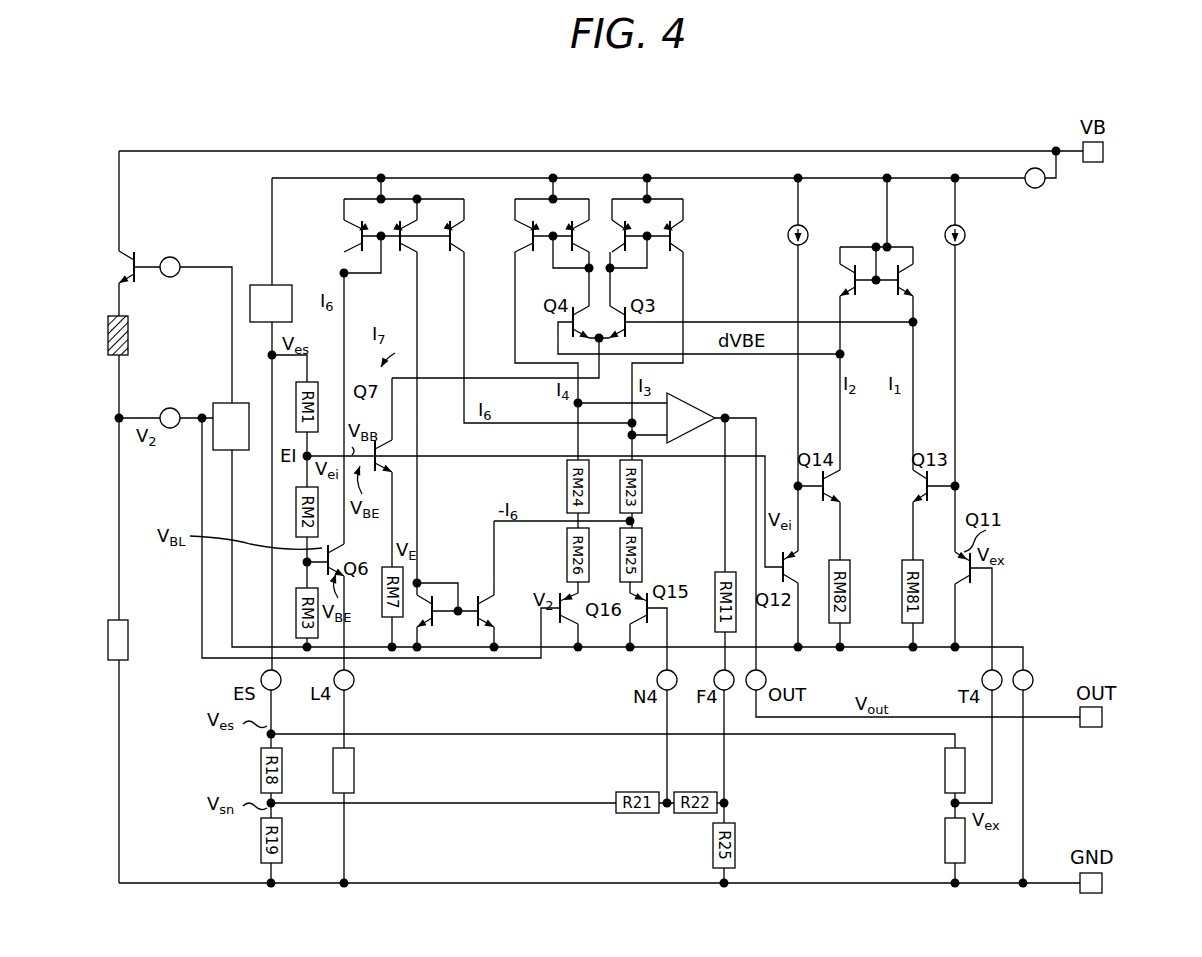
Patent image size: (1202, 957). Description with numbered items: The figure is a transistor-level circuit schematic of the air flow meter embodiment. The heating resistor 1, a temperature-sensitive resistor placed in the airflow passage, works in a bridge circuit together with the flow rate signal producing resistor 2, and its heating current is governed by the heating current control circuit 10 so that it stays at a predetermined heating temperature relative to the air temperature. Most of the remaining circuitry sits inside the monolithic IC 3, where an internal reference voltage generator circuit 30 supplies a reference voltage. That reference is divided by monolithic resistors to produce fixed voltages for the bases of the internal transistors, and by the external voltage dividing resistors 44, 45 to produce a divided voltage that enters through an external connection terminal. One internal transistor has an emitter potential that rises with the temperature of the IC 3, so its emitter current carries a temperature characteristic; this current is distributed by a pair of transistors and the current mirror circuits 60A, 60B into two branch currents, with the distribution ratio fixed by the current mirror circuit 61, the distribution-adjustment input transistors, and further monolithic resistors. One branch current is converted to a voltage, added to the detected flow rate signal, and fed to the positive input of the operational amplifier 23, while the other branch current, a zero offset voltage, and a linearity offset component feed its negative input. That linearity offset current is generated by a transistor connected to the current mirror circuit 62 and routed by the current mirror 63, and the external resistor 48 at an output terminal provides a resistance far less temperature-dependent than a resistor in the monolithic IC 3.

The heating resistor 1 is at (108, 335).
The resistor 2 is at (108, 642).
The IC 3 is at (982, 167).
The heating current control circuit 10 is at (225, 404).
The operational amplifier 23 is at (696, 402).
The internal reference voltage generator circuit 30 is at (263, 283).
The voltage dividing resistor 44 is at (944, 772).
The voltage dividing resistor 45 is at (944, 846).
The resistor 48 is at (356, 770).
The current mirror circuit 60A is at (664, 213).
The current mirror circuit 60B is at (574, 213).
The current mirror circuit 61 is at (886, 301).
The current mirror circuit 62 is at (363, 213).
The current mirror 63 is at (465, 630).